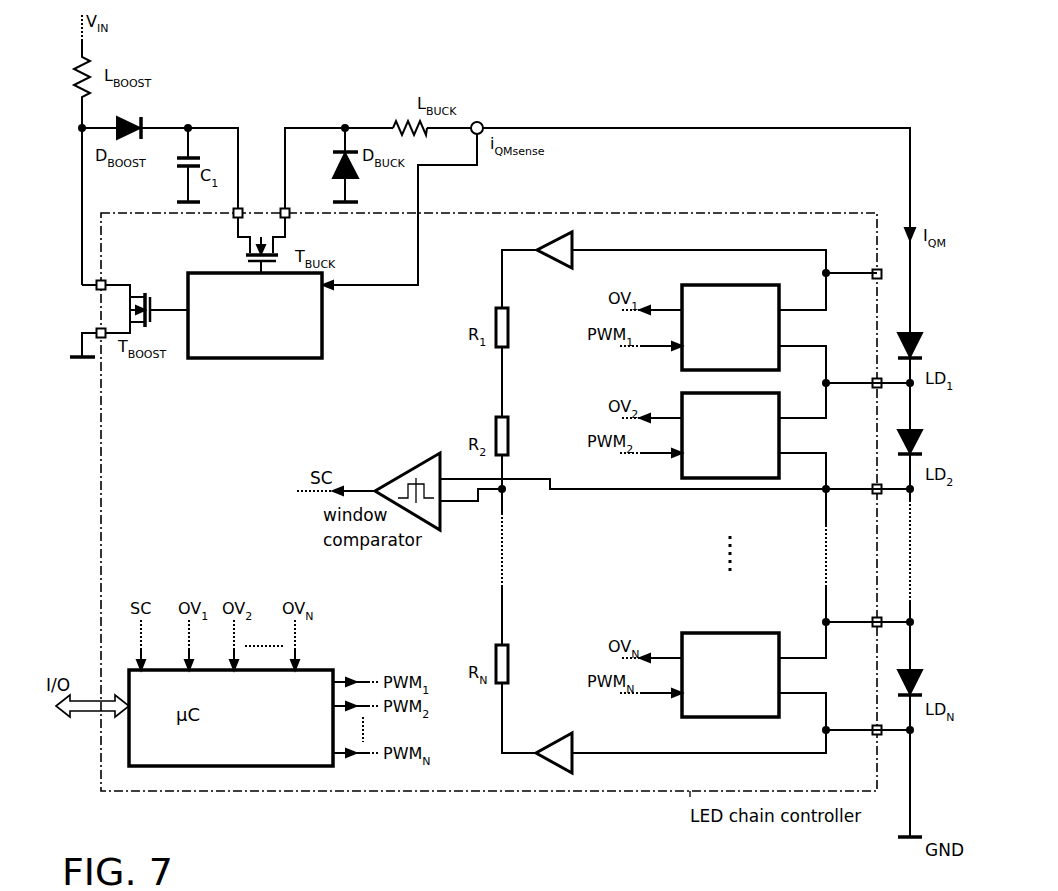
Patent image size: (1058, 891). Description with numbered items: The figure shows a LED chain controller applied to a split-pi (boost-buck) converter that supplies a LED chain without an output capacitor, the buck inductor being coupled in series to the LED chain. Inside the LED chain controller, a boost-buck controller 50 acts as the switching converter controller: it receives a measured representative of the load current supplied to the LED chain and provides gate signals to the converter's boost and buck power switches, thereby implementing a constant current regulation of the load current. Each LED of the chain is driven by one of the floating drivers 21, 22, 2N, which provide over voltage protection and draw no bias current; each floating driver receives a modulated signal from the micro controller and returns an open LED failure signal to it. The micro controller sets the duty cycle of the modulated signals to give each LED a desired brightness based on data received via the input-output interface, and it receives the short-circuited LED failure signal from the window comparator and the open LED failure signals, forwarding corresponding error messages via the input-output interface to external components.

The boost-buck controller 50 is at (255, 315).
The floating driver 21 is at (730, 327).
The floating driver 22 is at (730, 435).
The floating driver 2N is at (730, 675).